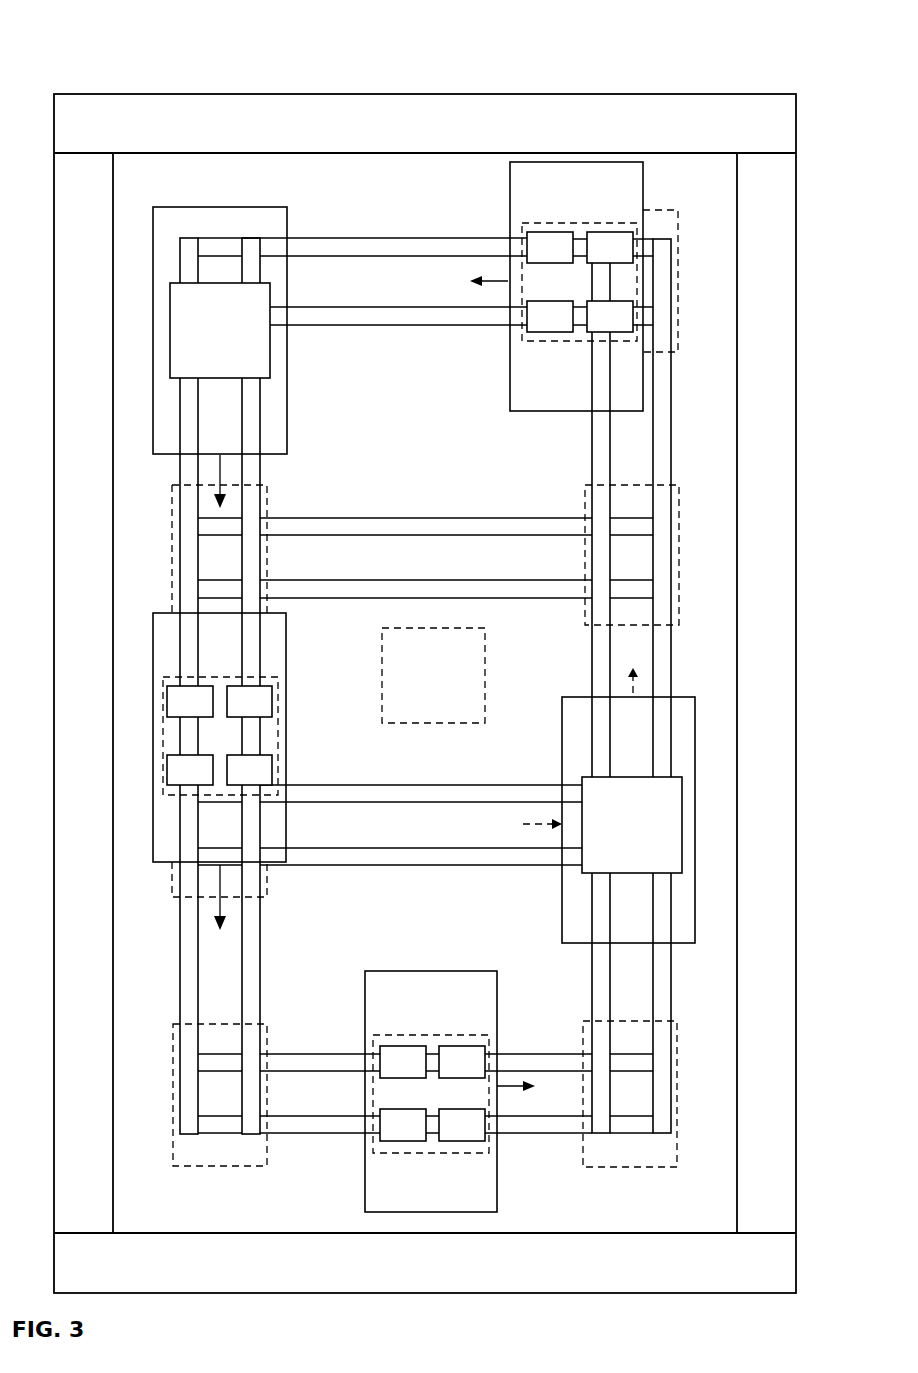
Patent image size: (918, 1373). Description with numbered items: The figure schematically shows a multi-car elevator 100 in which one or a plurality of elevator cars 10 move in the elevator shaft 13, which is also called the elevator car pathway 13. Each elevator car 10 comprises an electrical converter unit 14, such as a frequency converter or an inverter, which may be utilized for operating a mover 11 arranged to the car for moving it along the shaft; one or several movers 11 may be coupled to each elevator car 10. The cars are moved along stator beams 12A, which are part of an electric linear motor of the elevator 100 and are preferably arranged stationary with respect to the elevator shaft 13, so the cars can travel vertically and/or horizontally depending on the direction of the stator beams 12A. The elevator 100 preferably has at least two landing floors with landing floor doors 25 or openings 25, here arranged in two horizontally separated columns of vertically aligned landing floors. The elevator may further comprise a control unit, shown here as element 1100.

The elevator 100 is at (130, 57).
The electrical converter unit 14 is at (222, 206).
The mover 11 is at (206, 340).
The elevator car 10 is at (206, 416).
The elevator shaft 13 is at (402, 475).
The stator beam 12A is at (192, 540).
The landing floor door 25 is at (206, 565).
The control device 1100 is at (405, 686).